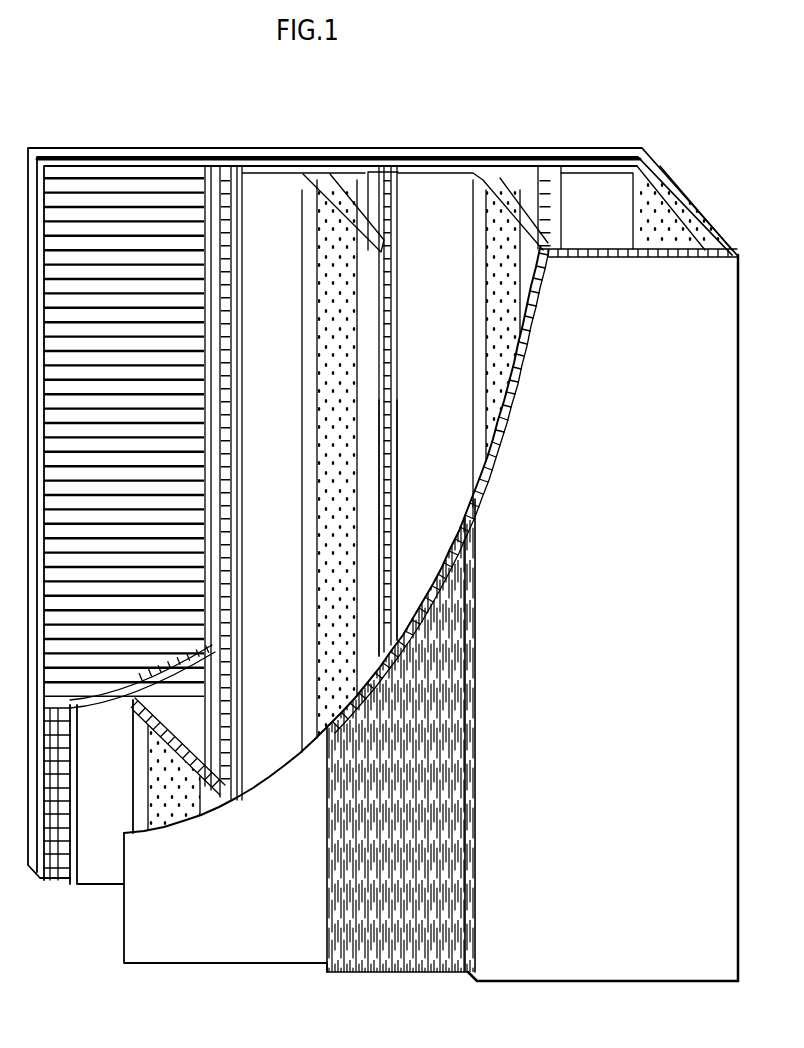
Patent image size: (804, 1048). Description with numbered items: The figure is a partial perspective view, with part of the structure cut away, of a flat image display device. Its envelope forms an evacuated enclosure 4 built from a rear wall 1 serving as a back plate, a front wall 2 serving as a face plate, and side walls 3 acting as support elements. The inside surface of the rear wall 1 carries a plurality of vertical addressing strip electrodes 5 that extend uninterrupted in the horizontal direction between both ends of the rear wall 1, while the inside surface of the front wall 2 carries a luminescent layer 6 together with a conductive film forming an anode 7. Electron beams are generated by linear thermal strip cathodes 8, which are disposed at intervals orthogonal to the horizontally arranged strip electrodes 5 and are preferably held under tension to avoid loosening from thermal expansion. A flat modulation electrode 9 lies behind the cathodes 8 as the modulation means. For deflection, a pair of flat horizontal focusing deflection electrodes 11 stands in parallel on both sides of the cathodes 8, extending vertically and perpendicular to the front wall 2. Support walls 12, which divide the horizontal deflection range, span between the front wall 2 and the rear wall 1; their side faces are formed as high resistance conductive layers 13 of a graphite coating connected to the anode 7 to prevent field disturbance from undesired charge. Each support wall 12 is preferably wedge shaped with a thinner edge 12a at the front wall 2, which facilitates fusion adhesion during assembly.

The rear wall 1 is at (62, 149).
The front wall 2 is at (577, 967).
The side walls 3 is at (690, 218).
The evacuated enclosure 4 is at (572, 541).
The vertical addressing strip electrodes 5 is at (150, 168).
The luminescent layer 6 is at (394, 968).
The anode 7 is at (173, 963).
The linear thermal strip cathodes 8 is at (381, 228).
The modulation electrode 9 is at (212, 168).
The horizontal focusing deflection electrodes 11 is at (397, 175).
The support walls 12 is at (345, 207).
The thinner edge 12a is at (372, 516).
The high resistance conductive layers 13 is at (492, 333).